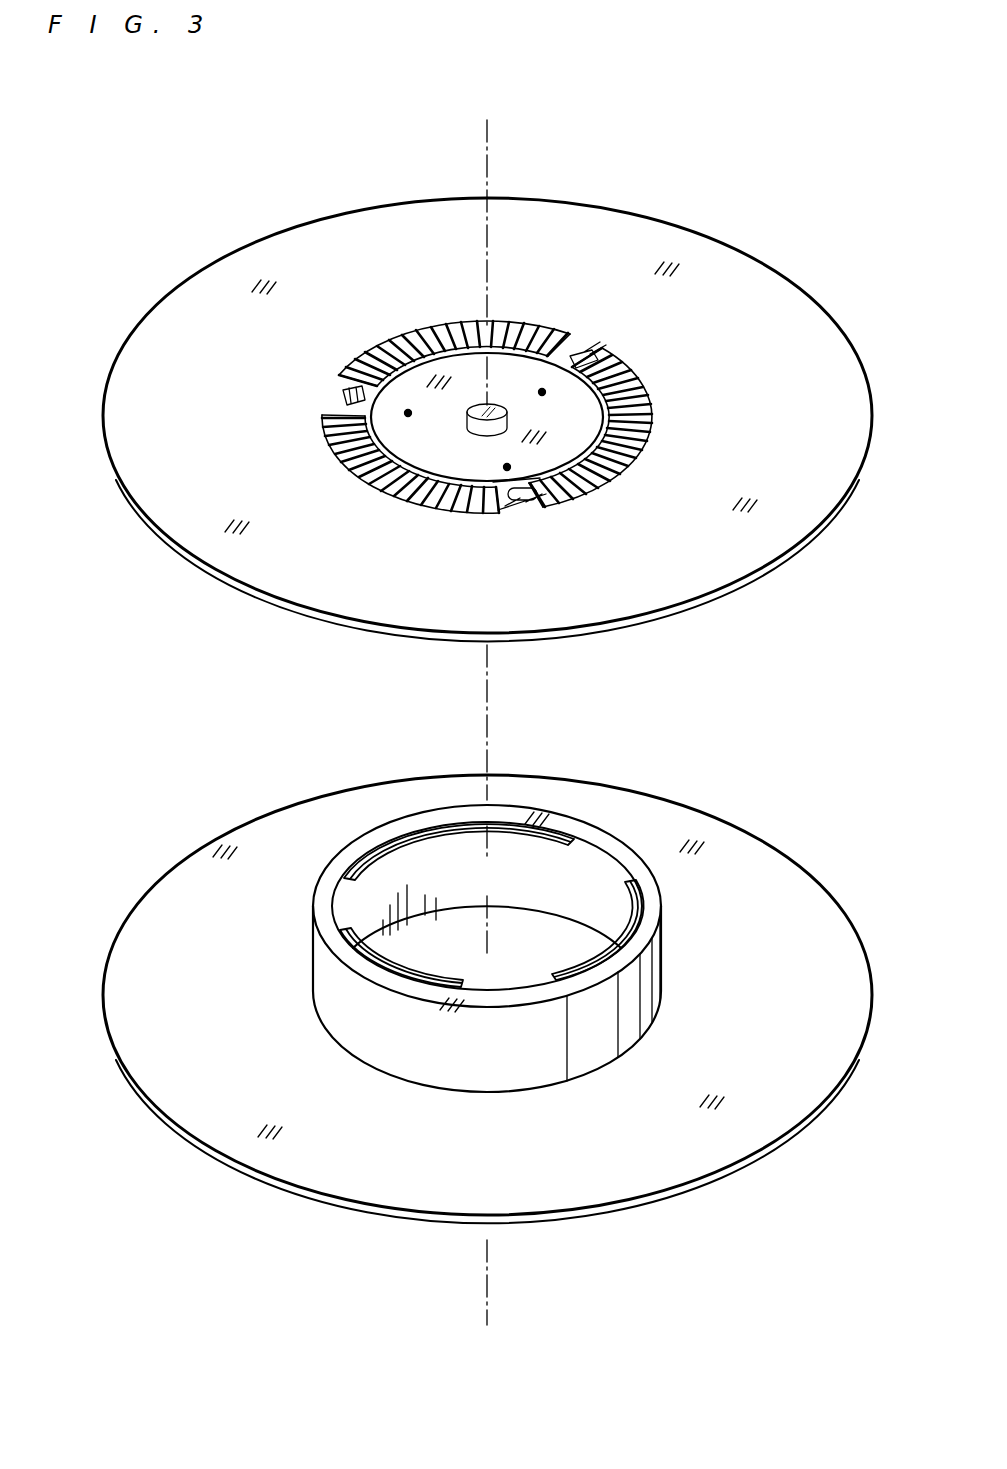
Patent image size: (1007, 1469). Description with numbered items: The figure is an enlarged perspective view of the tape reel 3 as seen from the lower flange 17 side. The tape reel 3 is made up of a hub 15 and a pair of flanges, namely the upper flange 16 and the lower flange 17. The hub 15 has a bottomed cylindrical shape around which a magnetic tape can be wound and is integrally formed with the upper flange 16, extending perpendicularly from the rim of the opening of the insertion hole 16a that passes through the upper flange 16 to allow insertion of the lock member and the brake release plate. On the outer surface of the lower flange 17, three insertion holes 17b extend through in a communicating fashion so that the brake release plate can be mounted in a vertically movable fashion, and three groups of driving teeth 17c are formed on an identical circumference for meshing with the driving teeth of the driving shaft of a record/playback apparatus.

The tape reel 3 is at (492, 109).
The hub 15 is at (580, 1048).
The upper flange 16 is at (187, 878).
The insertion hole 16a is at (421, 945).
The lower flange 17 is at (822, 333).
The insertion holes 17b is at (343, 390).
The driving teeth 17c is at (397, 340).